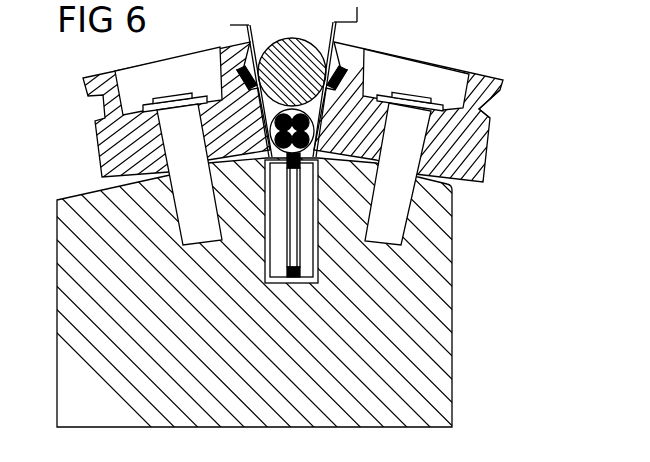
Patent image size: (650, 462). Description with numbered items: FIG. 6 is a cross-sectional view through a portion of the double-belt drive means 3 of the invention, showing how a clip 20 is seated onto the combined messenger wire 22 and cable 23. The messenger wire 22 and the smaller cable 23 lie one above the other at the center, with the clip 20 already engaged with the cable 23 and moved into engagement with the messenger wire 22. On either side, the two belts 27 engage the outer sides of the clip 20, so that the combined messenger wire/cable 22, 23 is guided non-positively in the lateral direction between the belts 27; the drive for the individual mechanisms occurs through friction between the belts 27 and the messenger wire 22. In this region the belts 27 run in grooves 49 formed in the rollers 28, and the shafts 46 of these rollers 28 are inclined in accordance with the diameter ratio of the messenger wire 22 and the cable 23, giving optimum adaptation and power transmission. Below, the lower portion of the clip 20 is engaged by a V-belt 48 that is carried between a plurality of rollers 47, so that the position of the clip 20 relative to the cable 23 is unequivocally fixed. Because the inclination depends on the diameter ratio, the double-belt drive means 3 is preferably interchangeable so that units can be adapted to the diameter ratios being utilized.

The double-belt drive means 3 is at (453, 342).
The clip 20 is at (252, 25).
The messenger wire 22 is at (306, 64).
The cable 23 is at (363, 78).
The belts 27 is at (235, 68).
The rollers 28 is at (120, 163).
The shafts 46 is at (193, 218).
The rollers 47 is at (271, 258).
The V-belt 48 is at (288, 281).
The grooves 49 is at (491, 110).